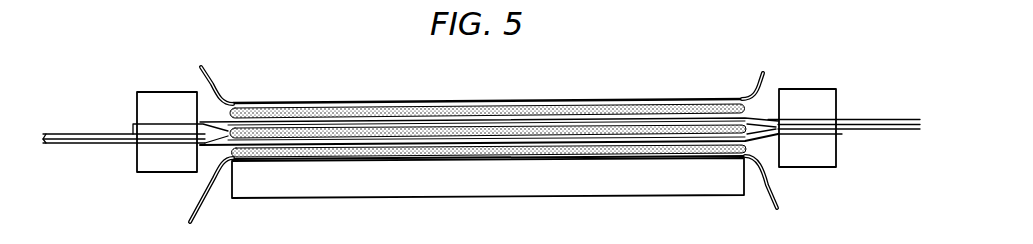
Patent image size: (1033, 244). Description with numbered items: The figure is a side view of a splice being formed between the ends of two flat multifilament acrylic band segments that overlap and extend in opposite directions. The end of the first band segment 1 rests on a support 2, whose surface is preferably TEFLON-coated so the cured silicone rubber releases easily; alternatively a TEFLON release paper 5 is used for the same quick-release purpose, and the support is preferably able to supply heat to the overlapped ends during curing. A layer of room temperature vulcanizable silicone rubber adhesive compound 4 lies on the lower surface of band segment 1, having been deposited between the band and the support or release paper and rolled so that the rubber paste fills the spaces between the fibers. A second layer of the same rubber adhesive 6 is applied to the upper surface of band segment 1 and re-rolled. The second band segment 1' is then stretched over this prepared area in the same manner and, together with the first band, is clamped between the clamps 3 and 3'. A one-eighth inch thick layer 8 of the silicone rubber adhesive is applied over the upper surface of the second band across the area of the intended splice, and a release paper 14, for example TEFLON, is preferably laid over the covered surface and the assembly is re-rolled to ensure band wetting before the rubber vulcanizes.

The band segment 1 is at (135, 162).
The second band segment 1' is at (835, 101).
The support 2 is at (338, 198).
The clamp 3 is at (155, 111).
The clamp 3' is at (825, 103).
The silicone rubber adhesive compound layer 4 is at (473, 148).
The release paper 5 is at (777, 202).
The rubber adhesive layer 6 is at (548, 128).
The silicone rubber adhesive layer 8 is at (628, 110).
The release paper 14 is at (760, 80).